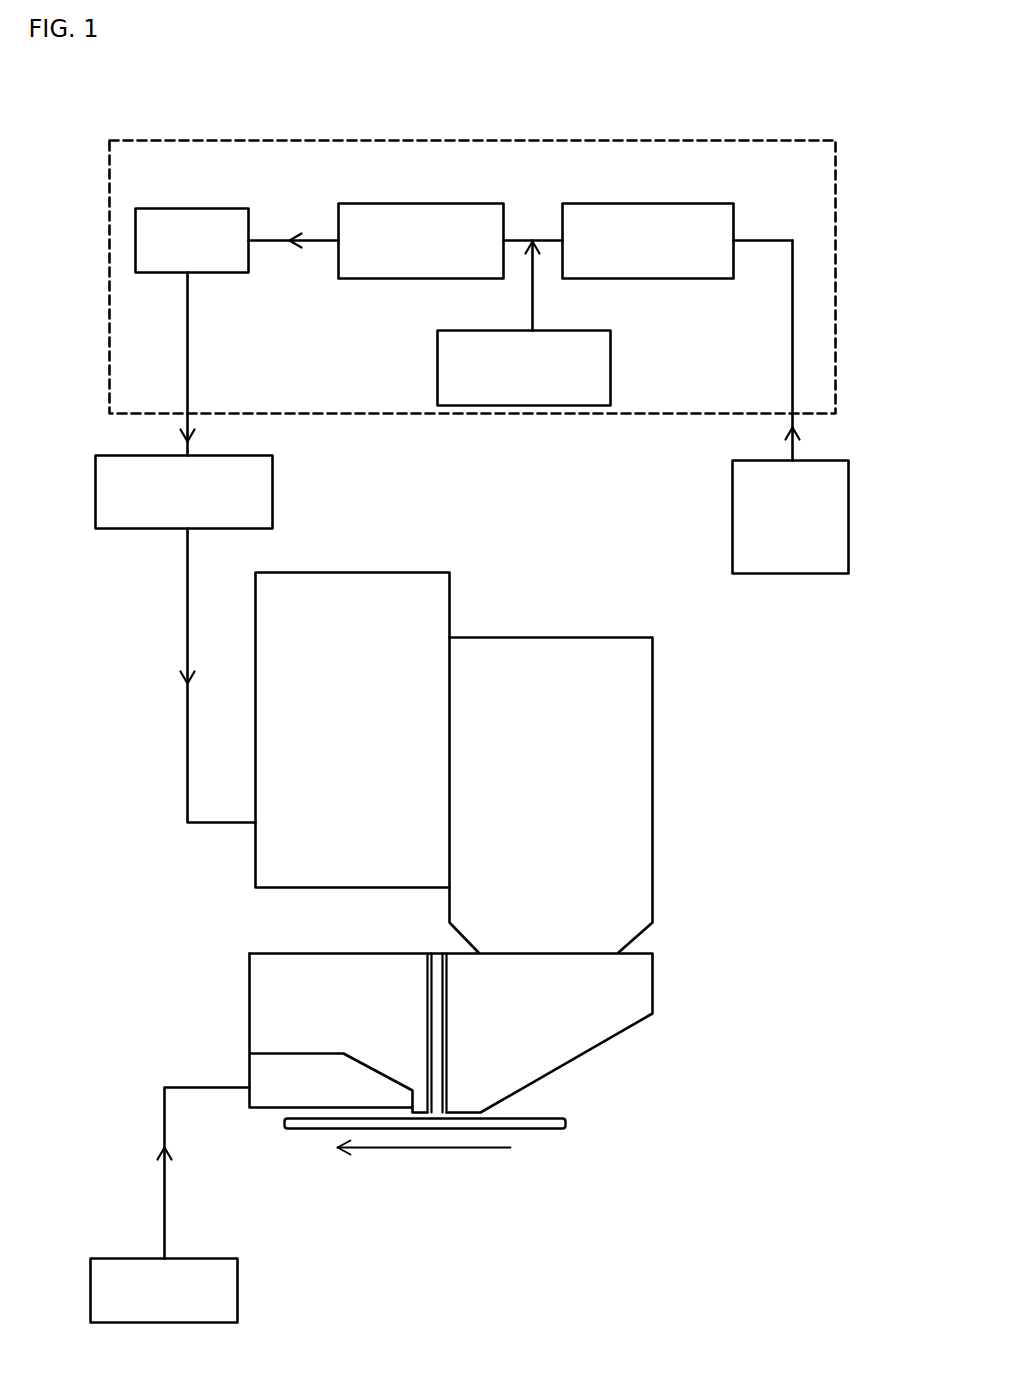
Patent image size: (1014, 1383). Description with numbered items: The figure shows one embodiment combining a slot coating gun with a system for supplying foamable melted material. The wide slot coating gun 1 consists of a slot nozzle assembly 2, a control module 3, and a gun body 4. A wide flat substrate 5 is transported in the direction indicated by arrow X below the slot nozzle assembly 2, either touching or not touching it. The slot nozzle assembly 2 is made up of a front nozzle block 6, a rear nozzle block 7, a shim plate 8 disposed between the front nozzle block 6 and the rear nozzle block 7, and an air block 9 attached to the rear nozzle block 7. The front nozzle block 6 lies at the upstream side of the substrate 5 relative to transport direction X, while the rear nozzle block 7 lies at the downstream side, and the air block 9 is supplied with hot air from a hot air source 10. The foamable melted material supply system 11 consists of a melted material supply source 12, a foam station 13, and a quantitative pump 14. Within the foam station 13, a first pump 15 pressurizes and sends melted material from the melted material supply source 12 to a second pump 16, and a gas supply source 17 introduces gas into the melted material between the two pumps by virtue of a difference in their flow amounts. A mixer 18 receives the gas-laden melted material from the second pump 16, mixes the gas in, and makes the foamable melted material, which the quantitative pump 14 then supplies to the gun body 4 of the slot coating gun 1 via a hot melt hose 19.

The wide slot coating gun 1 is at (718, 773).
The slot nozzle assembly 2 is at (636, 1071).
The control module 3 is at (588, 637).
The gun body 4 is at (410, 572).
The wide flat substrate 5 is at (558, 1128).
The front nozzle block 6 is at (636, 1000).
The rear nozzle block 7 is at (270, 1013).
The shim plate 8 is at (432, 953).
The air block 9 is at (285, 1082).
The hot air source 10 is at (90, 1260).
The foamable melted material supply system 11 is at (762, 128).
The melted material supply source 12 is at (732, 522).
The foam station 13 is at (372, 140).
The quantitative pump 14 is at (273, 497).
The first pump 15 is at (735, 216).
The second pump 16 is at (503, 216).
The gas supply source 17 is at (610, 350).
The mixer 18 is at (248, 270).
The hot melt hose 19 is at (185, 630).
The transport direction X is at (423, 1150).